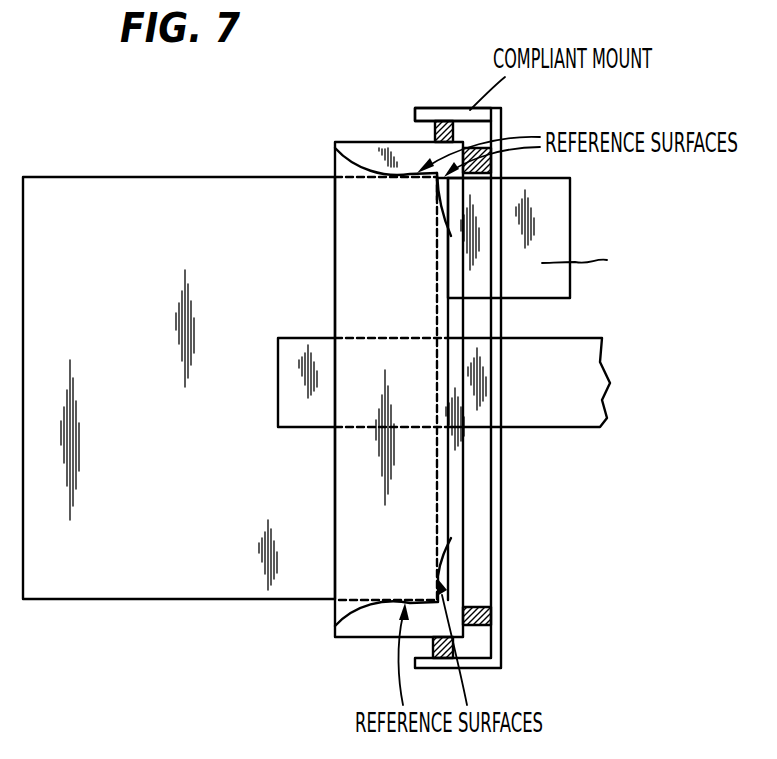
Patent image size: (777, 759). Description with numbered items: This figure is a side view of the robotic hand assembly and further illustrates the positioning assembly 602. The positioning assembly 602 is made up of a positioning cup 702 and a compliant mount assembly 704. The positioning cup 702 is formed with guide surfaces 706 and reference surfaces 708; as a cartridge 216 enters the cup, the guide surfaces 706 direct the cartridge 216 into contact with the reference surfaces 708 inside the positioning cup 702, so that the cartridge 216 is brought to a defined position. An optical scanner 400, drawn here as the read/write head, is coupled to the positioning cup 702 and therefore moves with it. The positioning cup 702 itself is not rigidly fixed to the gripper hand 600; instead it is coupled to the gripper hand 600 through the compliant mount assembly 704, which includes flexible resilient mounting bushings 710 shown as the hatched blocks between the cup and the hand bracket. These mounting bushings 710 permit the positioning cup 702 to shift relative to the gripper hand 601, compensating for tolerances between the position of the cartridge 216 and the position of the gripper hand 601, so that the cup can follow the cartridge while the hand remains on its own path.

The cartridge 216 is at (171, 417).
The optical scanner 400 is at (570, 213).
The gripper hand 600 is at (587, 409).
The gripper hand 601 is at (303, 415).
The positioning assembly 602 is at (399, 112).
The positioning cup 702 is at (368, 637).
The compliant mount assembly 704 is at (453, 118).
The guide surfaces 706 is at (360, 160).
The reference surfaces 708 is at (437, 195).
The mounting bushings 710 is at (489, 620).